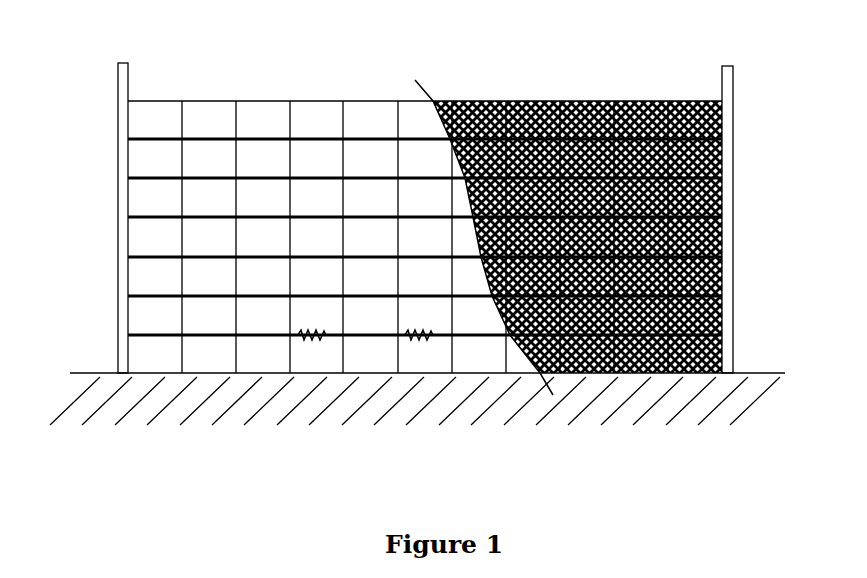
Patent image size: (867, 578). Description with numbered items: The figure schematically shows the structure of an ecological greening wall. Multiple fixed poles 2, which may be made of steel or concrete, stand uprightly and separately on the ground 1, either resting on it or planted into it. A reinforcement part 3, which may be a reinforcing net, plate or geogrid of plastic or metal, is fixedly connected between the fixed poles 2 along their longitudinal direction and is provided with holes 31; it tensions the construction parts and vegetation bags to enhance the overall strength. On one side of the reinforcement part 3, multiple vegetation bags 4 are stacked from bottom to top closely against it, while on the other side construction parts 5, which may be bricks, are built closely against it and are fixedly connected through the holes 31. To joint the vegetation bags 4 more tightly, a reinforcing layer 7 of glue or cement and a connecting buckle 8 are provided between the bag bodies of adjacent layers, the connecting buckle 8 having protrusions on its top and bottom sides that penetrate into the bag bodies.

The ground 1 is at (755, 373).
The fixed pole 2 is at (124, 85).
The reinforcement part 3 is at (723, 147).
The hole 31 is at (723, 185).
The vegetation bag 4 is at (323, 120).
The construction part 5 is at (483, 101).
The reinforcing layer 7 is at (472, 337).
The connecting buckle 8 is at (426, 338).